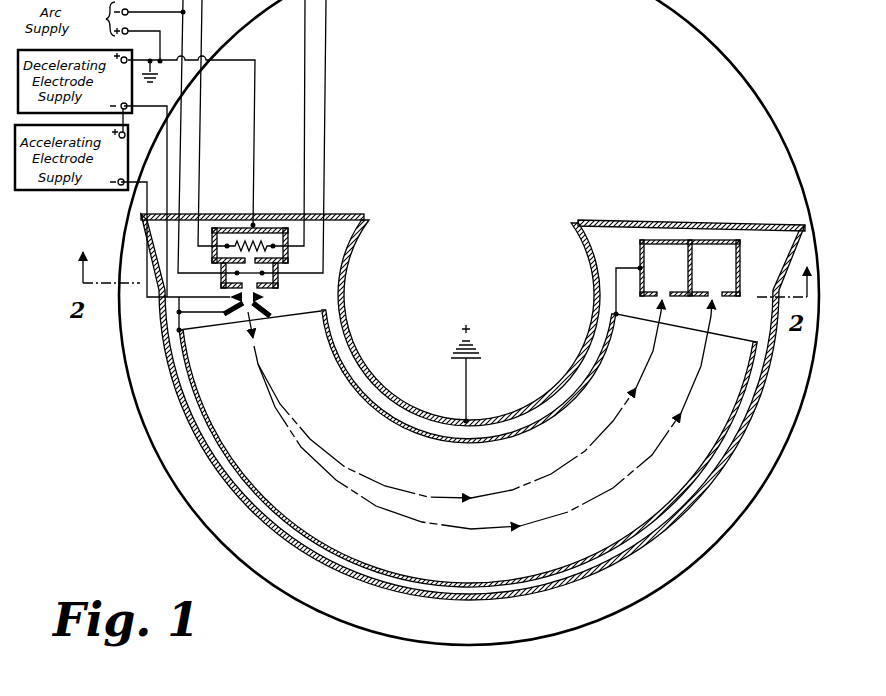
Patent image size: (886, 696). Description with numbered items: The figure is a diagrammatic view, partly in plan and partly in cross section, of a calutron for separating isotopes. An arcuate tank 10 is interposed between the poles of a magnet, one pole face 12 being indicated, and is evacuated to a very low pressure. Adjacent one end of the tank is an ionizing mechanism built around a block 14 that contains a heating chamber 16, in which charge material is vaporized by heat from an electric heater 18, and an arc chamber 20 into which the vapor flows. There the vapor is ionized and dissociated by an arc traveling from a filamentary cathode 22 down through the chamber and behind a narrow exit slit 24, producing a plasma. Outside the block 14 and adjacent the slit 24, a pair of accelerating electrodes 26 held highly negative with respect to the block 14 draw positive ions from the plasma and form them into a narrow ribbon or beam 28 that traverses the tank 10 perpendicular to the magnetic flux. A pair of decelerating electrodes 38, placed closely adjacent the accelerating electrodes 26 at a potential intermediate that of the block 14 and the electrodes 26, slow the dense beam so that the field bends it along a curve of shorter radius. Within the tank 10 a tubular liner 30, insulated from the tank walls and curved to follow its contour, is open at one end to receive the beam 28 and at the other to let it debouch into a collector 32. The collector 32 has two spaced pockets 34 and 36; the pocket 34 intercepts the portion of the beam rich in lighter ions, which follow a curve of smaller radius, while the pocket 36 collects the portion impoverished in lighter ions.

The arcuate tank 10 is at (368, 229).
The pole face 12 is at (715, 545).
The block 14 is at (294, 230).
The heating chamber 16 is at (264, 236).
The electric heater 18 is at (242, 232).
The arc chamber 20 is at (278, 280).
The filamentary cathode 22 is at (284, 265).
The exit slit 24 is at (262, 293).
The accelerating electrodes 26 is at (264, 300).
The beam 28 is at (274, 392).
The tubular liner 30 is at (340, 363).
The collector 32 is at (700, 238).
The pocket 34 is at (660, 250).
The pocket 36 is at (724, 252).
The decelerating electrodes 38 is at (256, 311).